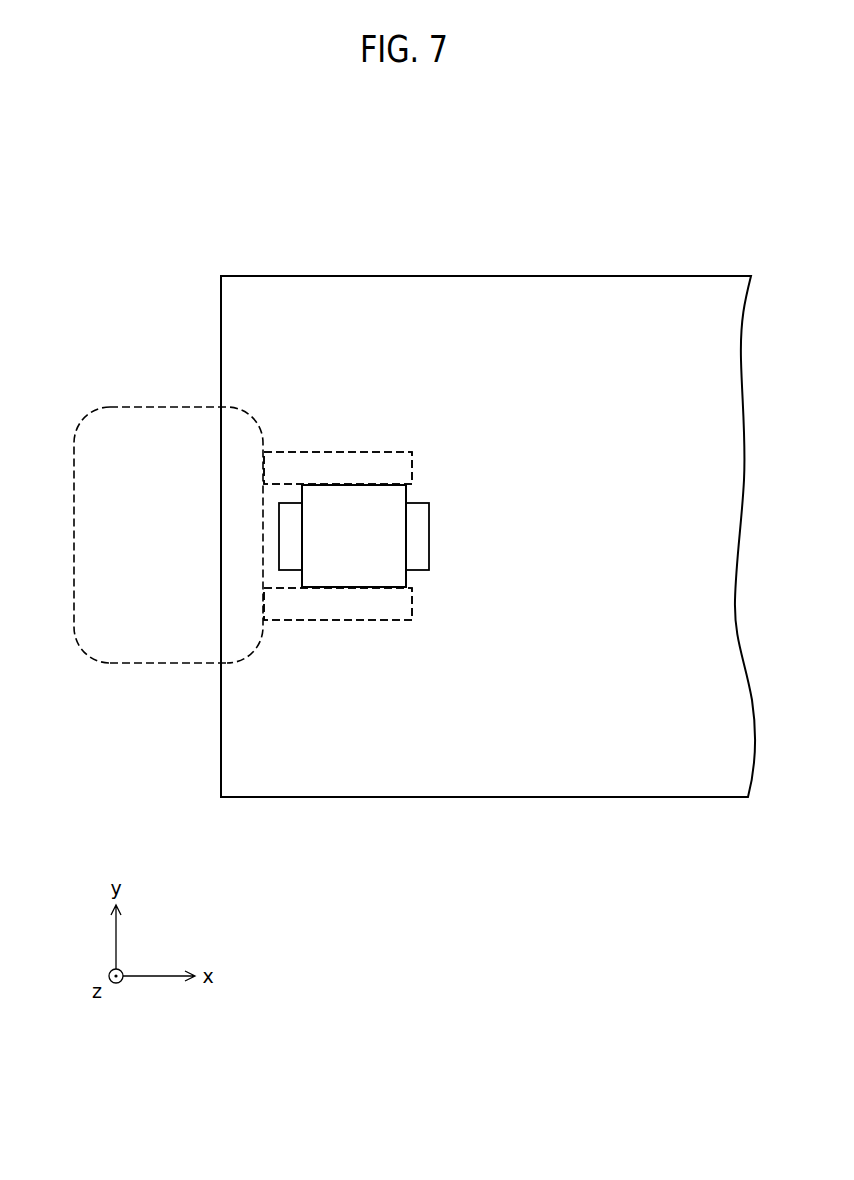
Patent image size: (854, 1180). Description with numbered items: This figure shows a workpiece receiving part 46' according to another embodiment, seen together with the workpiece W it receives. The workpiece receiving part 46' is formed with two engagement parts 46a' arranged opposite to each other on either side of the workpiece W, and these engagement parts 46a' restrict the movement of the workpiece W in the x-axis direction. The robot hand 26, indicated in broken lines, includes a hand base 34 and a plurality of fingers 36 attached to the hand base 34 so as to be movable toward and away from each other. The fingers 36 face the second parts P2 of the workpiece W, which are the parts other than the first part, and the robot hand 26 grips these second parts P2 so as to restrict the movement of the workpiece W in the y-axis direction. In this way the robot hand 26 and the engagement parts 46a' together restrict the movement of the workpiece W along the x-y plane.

The workpiece receiving part 46' is at (488, 494).
The engagement parts 46a' is at (401, 487).
The robot hand 26 is at (90, 400).
The hand base 34 is at (132, 650).
The fingers 36 is at (378, 466).
The second part P2 is at (395, 482).
The workpiece W is at (383, 570).